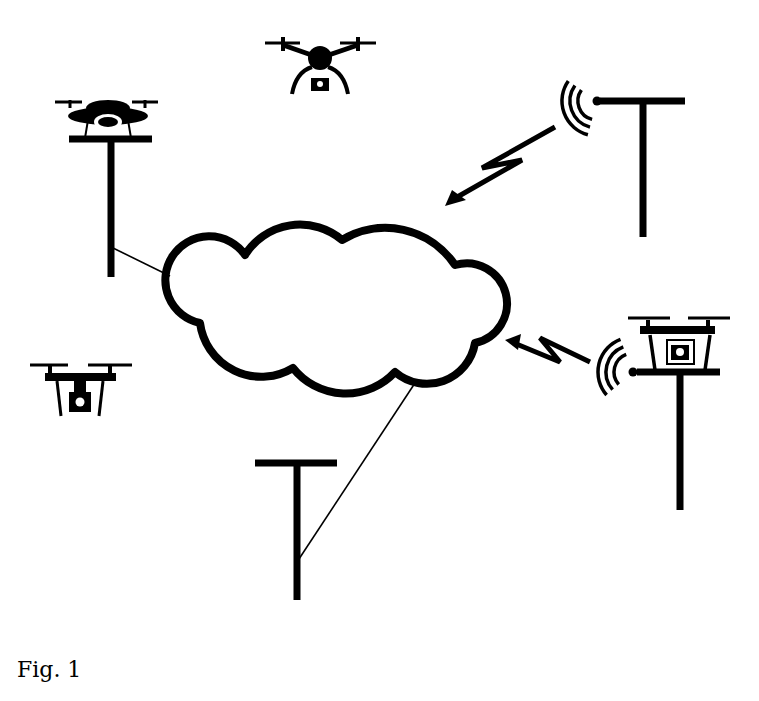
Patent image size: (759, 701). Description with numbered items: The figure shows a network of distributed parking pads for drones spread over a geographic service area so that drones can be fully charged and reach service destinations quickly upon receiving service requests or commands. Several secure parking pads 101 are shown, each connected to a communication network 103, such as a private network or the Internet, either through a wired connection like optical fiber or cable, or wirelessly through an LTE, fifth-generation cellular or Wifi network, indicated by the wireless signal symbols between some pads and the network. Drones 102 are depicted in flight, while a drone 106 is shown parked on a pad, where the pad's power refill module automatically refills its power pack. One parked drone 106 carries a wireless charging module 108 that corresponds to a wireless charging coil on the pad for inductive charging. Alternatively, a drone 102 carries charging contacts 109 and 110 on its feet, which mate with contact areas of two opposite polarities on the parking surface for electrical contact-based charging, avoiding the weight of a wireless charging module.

The parking pad 101 is at (394, 340).
The drone 102 is at (203, 243).
The communication network 103 is at (336, 309).
The drone parked at the slot 106 is at (386, 235).
The wireless charging module 108 is at (120, 123).
The charging contact 109 is at (57, 421).
The charging contact 110 is at (101, 421).